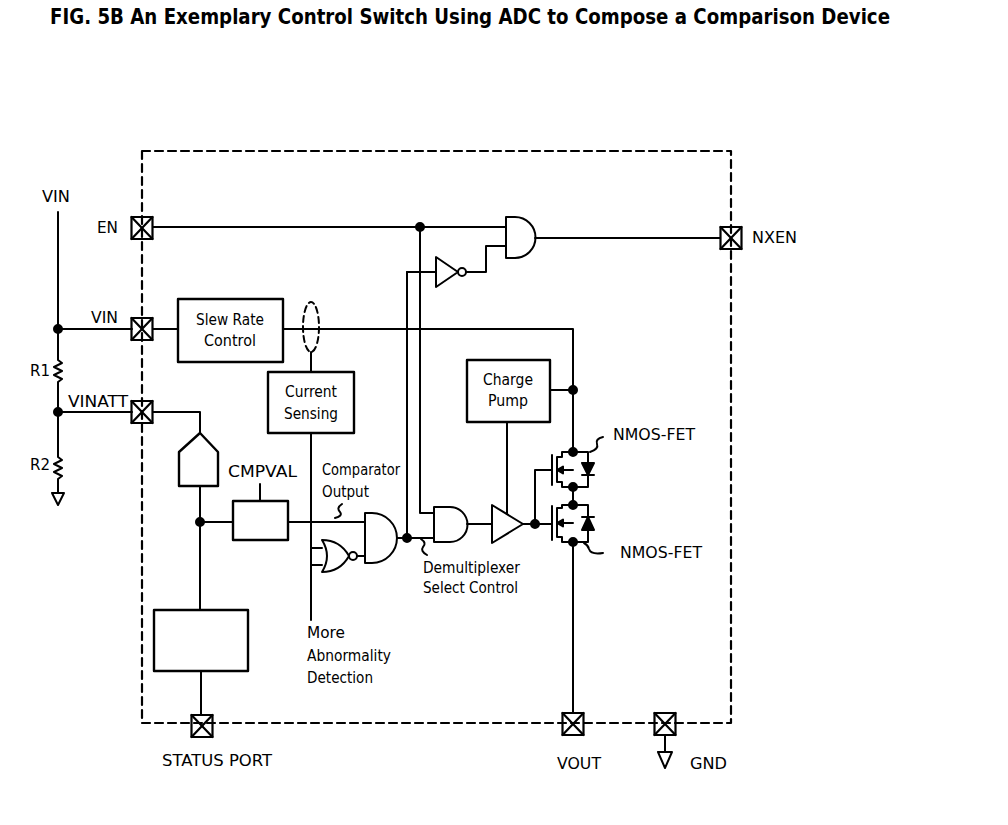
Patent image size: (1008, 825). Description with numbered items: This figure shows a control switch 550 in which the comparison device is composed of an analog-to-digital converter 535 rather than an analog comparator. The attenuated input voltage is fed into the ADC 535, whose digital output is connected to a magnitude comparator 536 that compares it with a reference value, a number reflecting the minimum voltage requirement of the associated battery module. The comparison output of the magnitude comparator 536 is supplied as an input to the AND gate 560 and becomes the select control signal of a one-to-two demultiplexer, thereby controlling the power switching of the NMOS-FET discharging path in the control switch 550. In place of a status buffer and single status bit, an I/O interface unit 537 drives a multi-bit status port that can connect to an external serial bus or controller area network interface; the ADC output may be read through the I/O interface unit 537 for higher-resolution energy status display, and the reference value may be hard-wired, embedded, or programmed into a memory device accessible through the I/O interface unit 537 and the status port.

The control switch 550 is at (436, 151).
The analog-to-digital converter 535 is at (178, 467).
The magnitude comparator 536 is at (232, 533).
The I/O interface unit 537 is at (247, 672).
The AND gate 560 is at (388, 564).